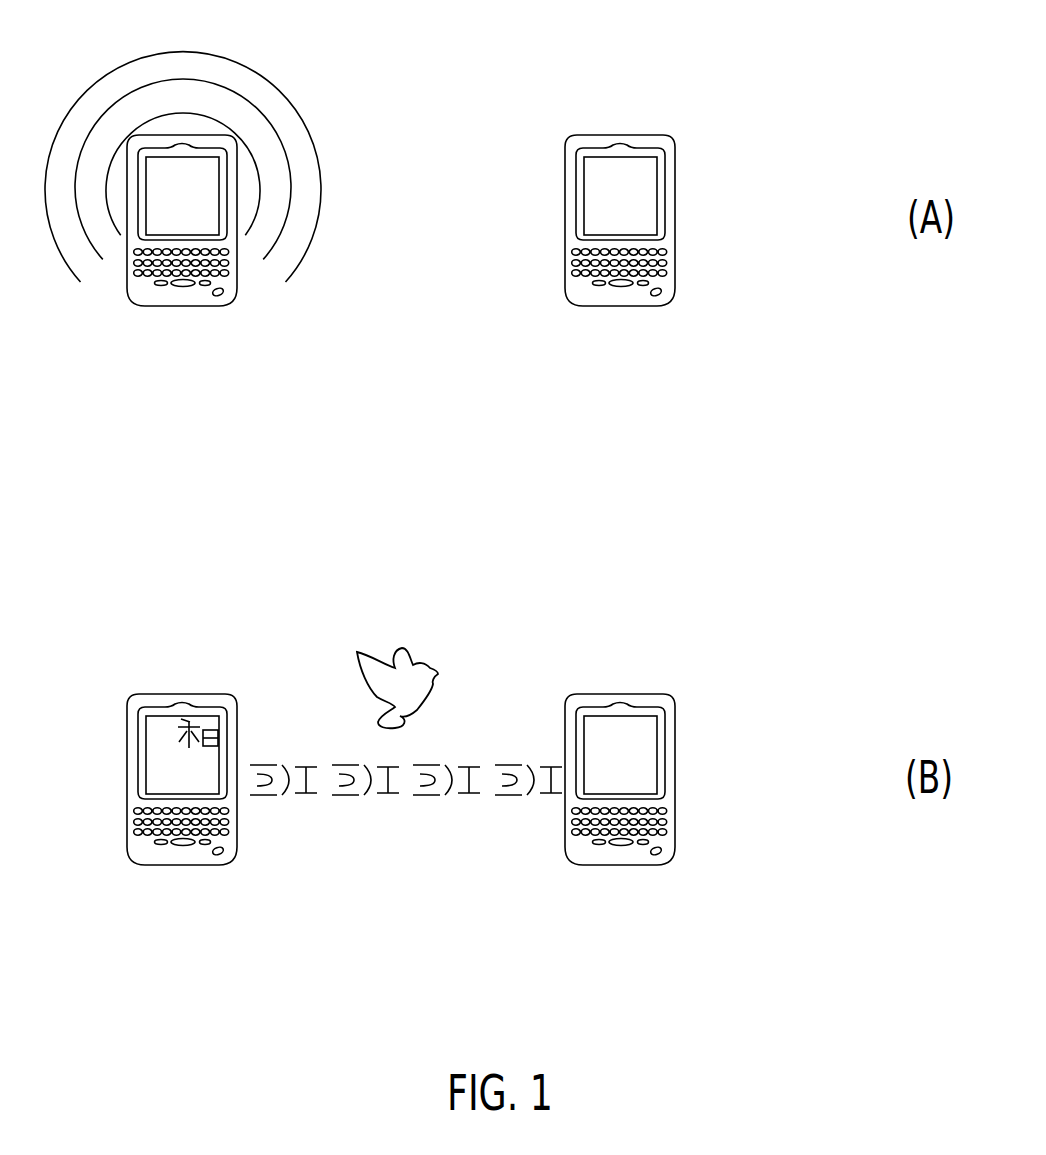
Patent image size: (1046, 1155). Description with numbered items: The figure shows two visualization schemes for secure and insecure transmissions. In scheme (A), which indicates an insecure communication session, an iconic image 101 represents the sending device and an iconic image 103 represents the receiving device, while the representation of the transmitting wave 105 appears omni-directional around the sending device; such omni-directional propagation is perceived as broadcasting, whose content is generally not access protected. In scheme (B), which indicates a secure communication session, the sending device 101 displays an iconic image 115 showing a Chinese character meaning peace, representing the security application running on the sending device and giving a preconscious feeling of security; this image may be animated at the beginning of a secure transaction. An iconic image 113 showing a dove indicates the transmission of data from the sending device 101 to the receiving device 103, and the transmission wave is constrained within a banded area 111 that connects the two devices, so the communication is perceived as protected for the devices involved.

The iconic image of sending device 101 is at (203, 306).
The iconic image of receiving device 103 is at (642, 306).
The transmitting wave representation 105 is at (248, 68).
The banded area 111 is at (340, 797).
The iconic image of dove 113 is at (412, 662).
The iconic image of Chinese character 115 is at (212, 729).